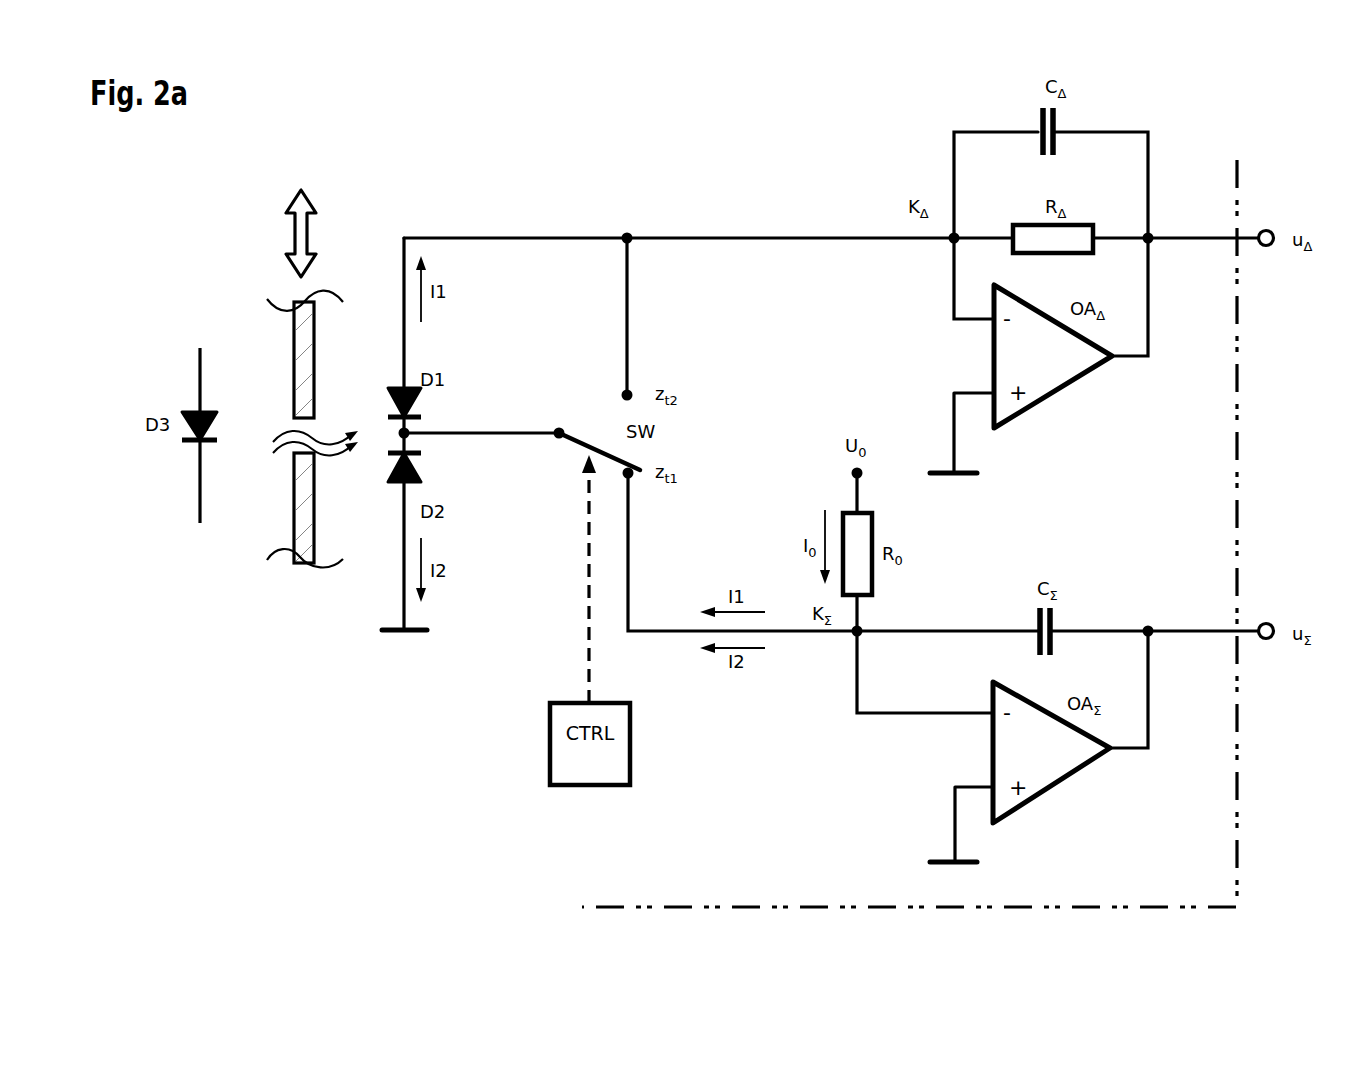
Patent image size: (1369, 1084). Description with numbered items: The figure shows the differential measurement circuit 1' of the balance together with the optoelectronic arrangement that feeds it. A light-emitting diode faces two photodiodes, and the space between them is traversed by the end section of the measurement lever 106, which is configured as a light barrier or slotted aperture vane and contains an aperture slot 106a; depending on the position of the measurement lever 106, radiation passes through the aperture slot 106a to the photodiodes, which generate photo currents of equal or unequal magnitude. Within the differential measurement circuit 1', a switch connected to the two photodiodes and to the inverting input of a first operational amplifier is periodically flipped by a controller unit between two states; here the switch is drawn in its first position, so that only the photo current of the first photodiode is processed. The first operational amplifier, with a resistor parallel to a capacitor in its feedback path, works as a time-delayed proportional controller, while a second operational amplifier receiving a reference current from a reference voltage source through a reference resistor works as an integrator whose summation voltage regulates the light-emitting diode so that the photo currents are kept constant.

The measurement lever 106 is at (292, 515).
The aperture slot 106a is at (312, 427).
The differential measurement circuit 1' is at (1184, 873).